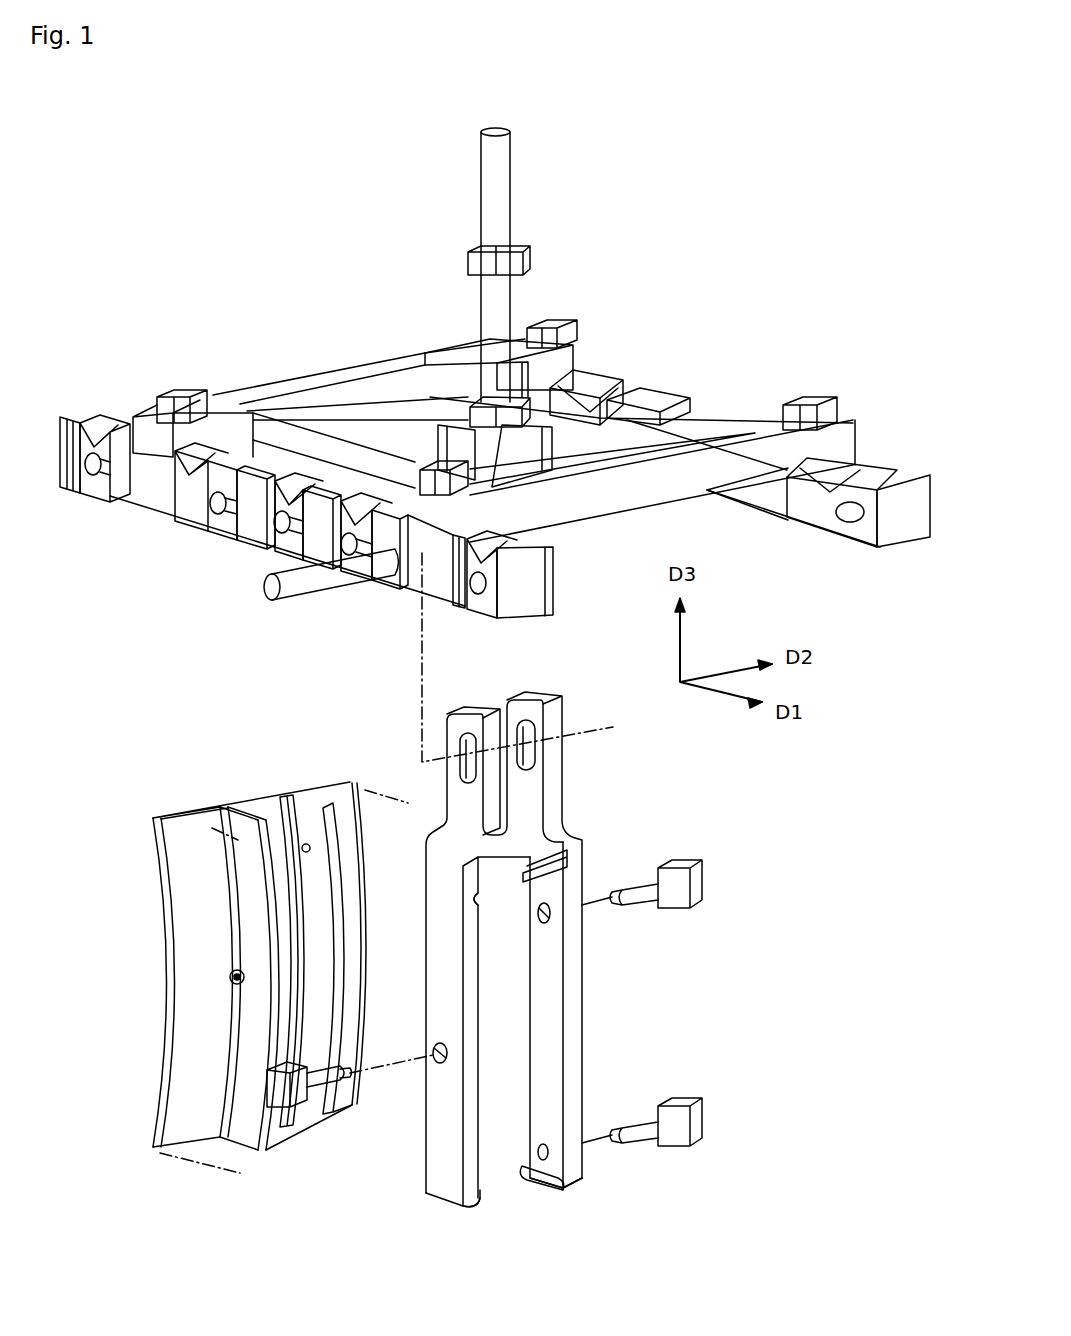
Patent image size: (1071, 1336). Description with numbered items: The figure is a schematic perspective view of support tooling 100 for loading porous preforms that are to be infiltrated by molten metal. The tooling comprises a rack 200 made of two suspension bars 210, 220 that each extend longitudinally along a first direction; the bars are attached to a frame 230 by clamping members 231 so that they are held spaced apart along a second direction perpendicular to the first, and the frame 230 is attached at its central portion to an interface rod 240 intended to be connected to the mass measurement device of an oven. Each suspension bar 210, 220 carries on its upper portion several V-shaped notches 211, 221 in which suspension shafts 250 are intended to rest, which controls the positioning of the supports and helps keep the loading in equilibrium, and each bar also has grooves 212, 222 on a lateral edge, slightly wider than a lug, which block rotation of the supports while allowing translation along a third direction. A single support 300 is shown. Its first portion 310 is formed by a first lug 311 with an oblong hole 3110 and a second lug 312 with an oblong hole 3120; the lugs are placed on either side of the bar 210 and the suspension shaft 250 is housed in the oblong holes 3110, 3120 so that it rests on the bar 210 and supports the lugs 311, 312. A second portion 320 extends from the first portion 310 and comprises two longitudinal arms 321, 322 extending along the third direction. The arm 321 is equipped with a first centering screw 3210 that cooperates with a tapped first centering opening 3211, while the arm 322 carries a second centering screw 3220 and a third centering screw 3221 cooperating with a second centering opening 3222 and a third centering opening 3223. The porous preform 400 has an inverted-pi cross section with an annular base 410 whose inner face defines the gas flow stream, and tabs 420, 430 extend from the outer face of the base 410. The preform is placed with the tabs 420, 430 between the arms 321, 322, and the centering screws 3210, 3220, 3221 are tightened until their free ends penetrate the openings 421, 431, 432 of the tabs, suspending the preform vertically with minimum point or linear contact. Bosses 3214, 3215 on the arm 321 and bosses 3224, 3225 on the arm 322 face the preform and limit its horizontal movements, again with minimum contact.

The support tooling 100 is at (725, 188).
The rack 200 is at (312, 349).
The suspension bar 210 is at (248, 545).
The V-shaped notches 211 is at (108, 430).
The grooves 212 is at (90, 490).
The suspension bar 220 is at (670, 396).
The V-shaped notches 221 is at (612, 378).
The grooves 222 is at (650, 385).
The frame 230 is at (357, 425).
The clamping members 231 is at (180, 392).
The interface rod 240 is at (505, 192).
The suspension shaft 250 is at (330, 580).
The support 300 is at (718, 823).
The first portion 310 is at (480, 956).
The first lug 311 is at (462, 805).
The second lug 312 is at (553, 778).
The oblong hole 3110 is at (458, 762).
The oblong hole 3120 is at (525, 740).
The second portion 320 is at (589, 1030).
The longitudinal arm 321 is at (438, 1163).
The longitudinal arm 322 is at (578, 1060).
The first centering screw 3210 is at (295, 1108).
The first centering opening 3211 is at (436, 1048).
The boss 3214 is at (476, 900).
The boss 3215 is at (470, 1210).
The second centering screw 3220 is at (700, 889).
The third centering screw 3221 is at (700, 1127).
The second centering opening 3222 is at (545, 924).
The third centering opening 3223 is at (540, 1188).
The boss 3224 is at (565, 868).
The boss 3225 is at (572, 1190).
The porous preform 400 is at (218, 962).
The annular base 410 is at (160, 904).
The tab 420 is at (209, 947).
The opening 421 is at (230, 978).
The tab 430 is at (298, 953).
The opening 431 is at (305, 843).
The opening 432 is at (330, 1102).